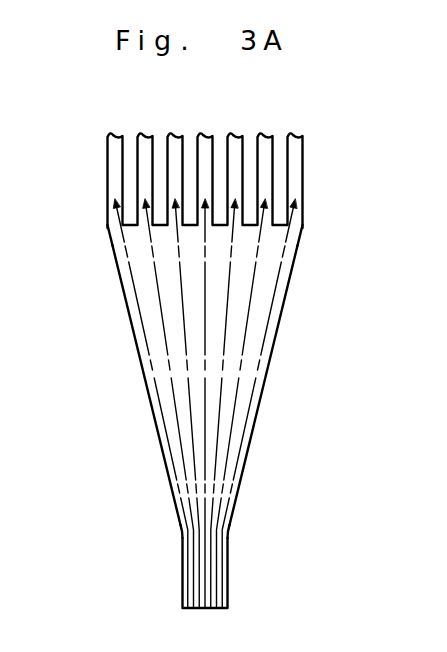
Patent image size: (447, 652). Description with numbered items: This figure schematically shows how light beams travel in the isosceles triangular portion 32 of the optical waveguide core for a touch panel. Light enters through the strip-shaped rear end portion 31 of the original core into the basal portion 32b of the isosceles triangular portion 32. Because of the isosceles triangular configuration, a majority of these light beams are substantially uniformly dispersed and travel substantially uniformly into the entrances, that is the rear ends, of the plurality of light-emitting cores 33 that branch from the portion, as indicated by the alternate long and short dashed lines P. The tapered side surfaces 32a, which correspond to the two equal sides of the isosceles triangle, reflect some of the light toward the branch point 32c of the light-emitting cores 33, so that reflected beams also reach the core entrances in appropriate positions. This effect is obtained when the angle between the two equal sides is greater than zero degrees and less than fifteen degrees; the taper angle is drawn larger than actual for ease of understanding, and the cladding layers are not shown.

The rear end portion 31 is at (218, 569).
The isosceles triangular portion 32 is at (206, 376).
The tapered side surfaces 32a is at (349, 415).
The basal portion 32b is at (231, 532).
The branch point 32c is at (300, 226).
The light-emitting cores 33 is at (262, 166).
The flow paths of liquid P is at (255, 273).